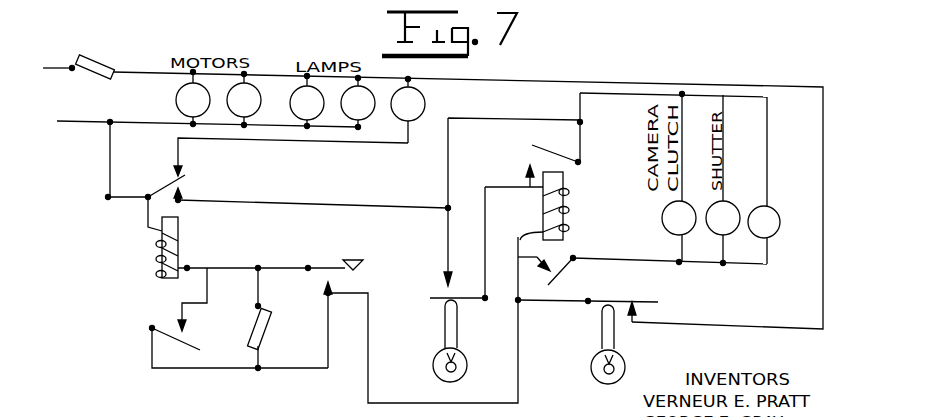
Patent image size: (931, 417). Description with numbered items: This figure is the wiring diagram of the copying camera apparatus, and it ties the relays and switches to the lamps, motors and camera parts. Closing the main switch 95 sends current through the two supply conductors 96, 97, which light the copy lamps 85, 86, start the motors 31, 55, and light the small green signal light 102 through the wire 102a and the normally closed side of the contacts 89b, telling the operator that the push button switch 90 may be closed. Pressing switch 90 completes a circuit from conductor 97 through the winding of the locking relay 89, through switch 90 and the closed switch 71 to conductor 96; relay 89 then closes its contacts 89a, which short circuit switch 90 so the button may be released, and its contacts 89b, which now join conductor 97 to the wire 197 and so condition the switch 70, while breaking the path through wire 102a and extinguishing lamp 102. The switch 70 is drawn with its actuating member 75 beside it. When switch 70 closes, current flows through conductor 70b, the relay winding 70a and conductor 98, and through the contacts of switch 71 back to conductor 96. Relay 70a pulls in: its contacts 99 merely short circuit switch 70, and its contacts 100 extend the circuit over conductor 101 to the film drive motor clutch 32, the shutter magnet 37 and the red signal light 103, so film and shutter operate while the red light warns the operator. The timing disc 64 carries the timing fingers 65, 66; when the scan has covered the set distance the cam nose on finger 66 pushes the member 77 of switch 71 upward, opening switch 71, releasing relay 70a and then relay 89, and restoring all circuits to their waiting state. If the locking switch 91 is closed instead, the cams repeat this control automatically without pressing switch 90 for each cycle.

The main switch 95 is at (78, 62).
The conductor 96 is at (468, 192).
The conductor 97 is at (209, 119).
The motor 31 is at (193, 97).
The motor 55 is at (244, 99).
The lamp 85 is at (307, 100).
The lamp 86 is at (358, 102).
The green signal light 102 is at (408, 110).
The wire 102a is at (291, 157).
The contacts 89b is at (184, 189).
The wire 197 is at (314, 200).
The relay 89 is at (177, 237).
The push button switch 90 is at (270, 263).
The contacts 89a is at (239, 318).
The switch 91 is at (269, 319).
The contacts 99 is at (546, 155).
The conductor 70b is at (514, 185).
The relay winding 70a is at (561, 206).
The switch 70 is at (468, 303).
The thermostat stem 75 is at (445, 318).
The timing finger 65 is at (440, 352).
The timing finger 66 is at (466, 352).
The disc 64 is at (458, 373).
The contacts 100 is at (550, 272).
The conductor 101 is at (670, 255).
The conductor 98 is at (587, 309).
The switch 71 is at (647, 302).
The member 77 is at (612, 333).
The film drive motor clutch 32 is at (679, 177).
The shutter magnet 37 is at (723, 179).
The red signal light 103 is at (764, 180).